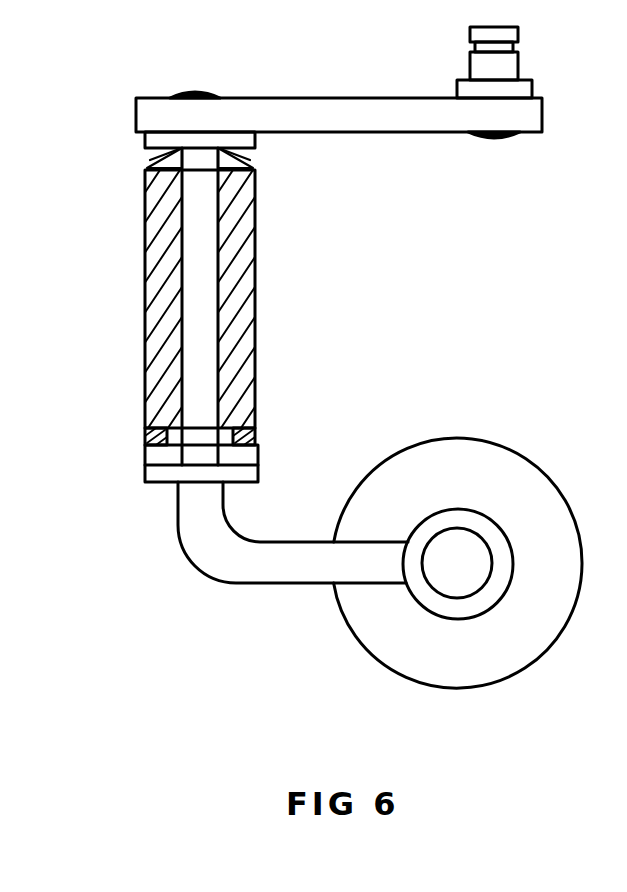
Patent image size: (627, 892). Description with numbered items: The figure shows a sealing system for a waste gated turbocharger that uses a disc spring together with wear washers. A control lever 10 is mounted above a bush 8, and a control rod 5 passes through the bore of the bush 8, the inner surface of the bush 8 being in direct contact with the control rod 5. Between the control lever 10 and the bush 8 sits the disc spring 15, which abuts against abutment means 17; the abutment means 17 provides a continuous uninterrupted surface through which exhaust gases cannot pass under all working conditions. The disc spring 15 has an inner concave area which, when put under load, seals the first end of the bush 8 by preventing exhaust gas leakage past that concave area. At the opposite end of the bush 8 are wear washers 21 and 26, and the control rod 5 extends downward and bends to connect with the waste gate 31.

The control lever 10 is at (340, 114).
The abutment means 17 is at (143, 137).
The disc spring 15 is at (224, 154).
The bush 8 is at (238, 312).
The control rod 5 is at (200, 253).
The wear washer 21 is at (244, 433).
The wear washer 26 is at (240, 456).
The waste gate 31 is at (515, 503).